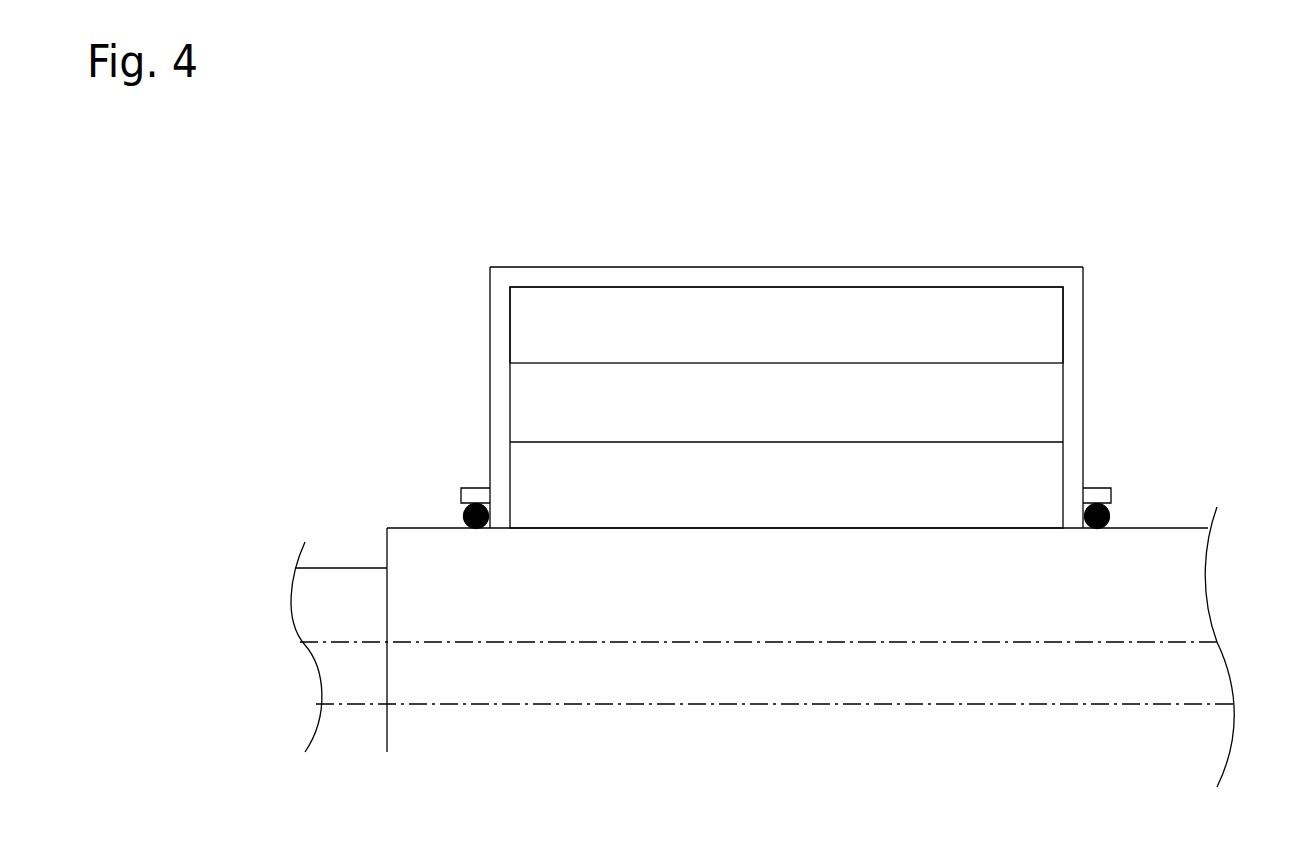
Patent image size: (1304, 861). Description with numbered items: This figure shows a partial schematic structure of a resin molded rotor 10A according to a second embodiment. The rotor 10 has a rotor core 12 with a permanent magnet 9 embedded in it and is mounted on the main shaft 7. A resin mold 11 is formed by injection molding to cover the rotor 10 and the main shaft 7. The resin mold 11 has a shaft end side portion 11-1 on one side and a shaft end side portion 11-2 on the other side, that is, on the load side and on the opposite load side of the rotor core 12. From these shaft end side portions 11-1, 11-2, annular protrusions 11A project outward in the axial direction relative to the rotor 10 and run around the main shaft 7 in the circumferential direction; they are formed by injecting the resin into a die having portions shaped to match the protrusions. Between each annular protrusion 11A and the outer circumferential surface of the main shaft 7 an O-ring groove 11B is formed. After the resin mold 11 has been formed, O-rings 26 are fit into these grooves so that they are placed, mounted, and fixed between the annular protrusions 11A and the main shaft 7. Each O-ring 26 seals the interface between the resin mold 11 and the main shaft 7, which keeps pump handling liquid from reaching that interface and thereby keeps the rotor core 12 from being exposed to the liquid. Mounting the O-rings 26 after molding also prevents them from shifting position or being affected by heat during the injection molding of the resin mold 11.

The main shaft 7 is at (710, 602).
The permanent magnet 9 is at (840, 405).
The rotor 10 is at (677, 267).
The resin molded rotor 10A is at (960, 210).
The resin mold 11 is at (750, 267).
The shaft end side portion of the resin mold 11-1 is at (1075, 345).
The shaft end side portion of the resin mold 11-2 is at (492, 344).
The annular protrusion 11A is at (469, 488).
The O-ring groove 11B is at (437, 518).
The rotor core 12 is at (607, 297).
The O-ring 26 is at (462, 513).